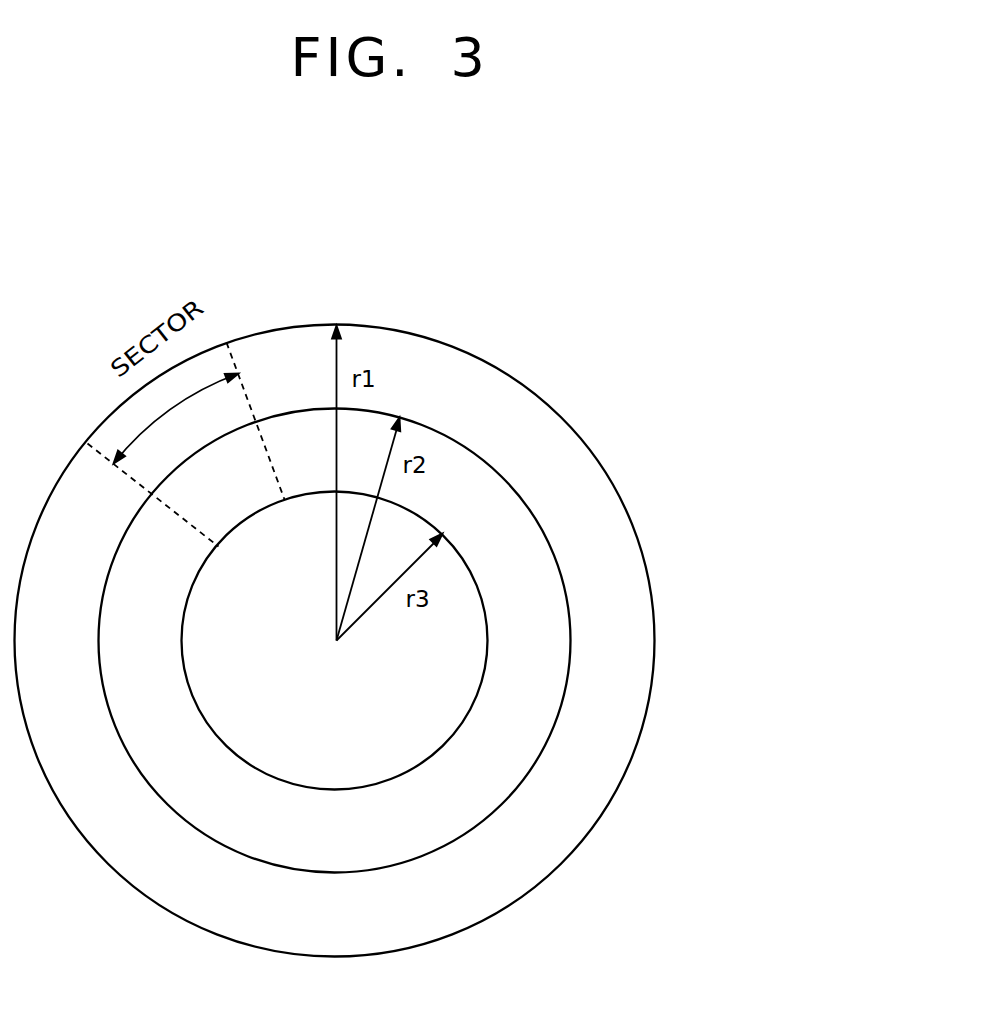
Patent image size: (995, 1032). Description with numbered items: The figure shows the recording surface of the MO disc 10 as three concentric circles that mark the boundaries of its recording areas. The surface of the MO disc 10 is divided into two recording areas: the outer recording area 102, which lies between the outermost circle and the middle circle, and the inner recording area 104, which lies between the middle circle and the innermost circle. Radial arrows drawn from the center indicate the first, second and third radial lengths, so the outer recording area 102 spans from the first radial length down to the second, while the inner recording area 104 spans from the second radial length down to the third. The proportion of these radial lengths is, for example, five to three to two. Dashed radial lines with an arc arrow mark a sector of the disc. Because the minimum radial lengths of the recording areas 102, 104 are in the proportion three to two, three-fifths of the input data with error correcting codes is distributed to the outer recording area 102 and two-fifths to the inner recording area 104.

The MO disc 10 is at (335, 678).
The outer recording area 102 is at (520, 410).
The inner recording area 104 is at (507, 505).